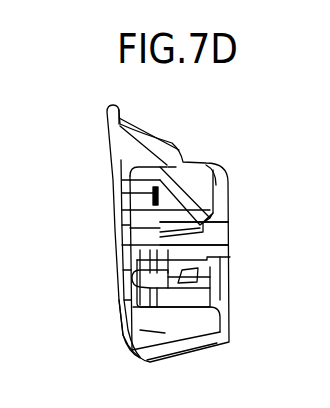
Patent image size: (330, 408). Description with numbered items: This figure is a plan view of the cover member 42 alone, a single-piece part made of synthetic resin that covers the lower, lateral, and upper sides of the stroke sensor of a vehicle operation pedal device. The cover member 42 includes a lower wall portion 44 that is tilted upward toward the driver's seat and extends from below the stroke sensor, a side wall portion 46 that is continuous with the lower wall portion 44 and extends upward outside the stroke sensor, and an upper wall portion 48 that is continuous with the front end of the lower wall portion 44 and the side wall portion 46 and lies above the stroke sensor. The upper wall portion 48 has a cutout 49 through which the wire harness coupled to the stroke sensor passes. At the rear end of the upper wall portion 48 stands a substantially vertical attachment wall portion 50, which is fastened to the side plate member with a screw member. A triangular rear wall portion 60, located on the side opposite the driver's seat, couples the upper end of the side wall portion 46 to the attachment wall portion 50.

The cover member 42 is at (238, 158).
The lower wall portion 44 is at (212, 248).
The side wall portion 46 is at (120, 273).
The upper wall portion 48 is at (150, 327).
The cutout 49 is at (205, 294).
The attachment wall portion 50 is at (208, 186).
The triangular rear wall portion 60 is at (145, 143).